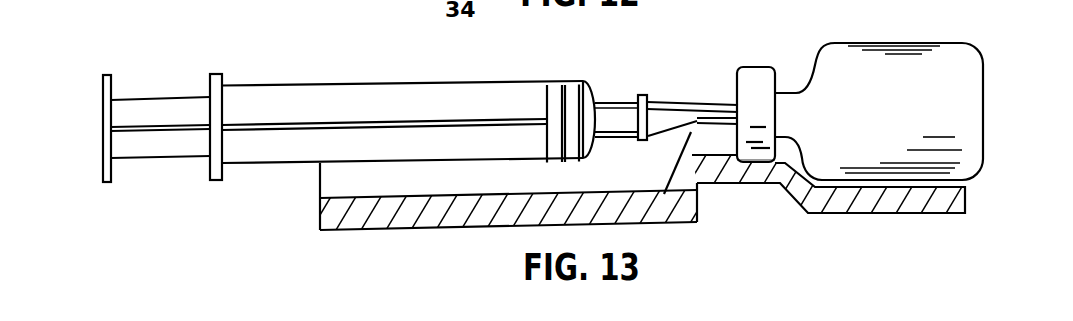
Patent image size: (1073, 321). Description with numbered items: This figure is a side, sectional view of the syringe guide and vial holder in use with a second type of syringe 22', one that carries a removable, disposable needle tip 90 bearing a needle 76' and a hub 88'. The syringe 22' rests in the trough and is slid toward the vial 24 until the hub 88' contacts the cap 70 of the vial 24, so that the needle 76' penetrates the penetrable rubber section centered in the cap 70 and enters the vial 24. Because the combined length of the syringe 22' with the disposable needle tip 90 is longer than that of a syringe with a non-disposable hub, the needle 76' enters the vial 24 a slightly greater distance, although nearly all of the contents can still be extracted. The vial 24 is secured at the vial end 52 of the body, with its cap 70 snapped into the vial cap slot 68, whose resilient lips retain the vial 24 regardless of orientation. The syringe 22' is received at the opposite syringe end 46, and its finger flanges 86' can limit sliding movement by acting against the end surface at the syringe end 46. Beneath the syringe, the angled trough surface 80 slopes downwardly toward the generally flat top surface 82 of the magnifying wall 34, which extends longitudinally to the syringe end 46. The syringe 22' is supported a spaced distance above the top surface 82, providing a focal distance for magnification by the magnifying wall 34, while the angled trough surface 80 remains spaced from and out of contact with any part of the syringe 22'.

The syringe 22' is at (434, 92).
The finger flanges 86' is at (162, 101).
The disposable needle tip 90 is at (669, 100).
The hub 88' is at (694, 215).
The angled trough surface 80 is at (674, 163).
The syringe end 46 is at (317, 187).
The magnifying wall 34 is at (420, 212).
The top surface of magnifying wall 82 is at (463, 193).
The cap 70 is at (756, 80).
The vial cap slot 68 is at (753, 163).
The vial 24 is at (962, 85).
The needle 76' is at (823, 122).
The vial end 52 is at (963, 196).